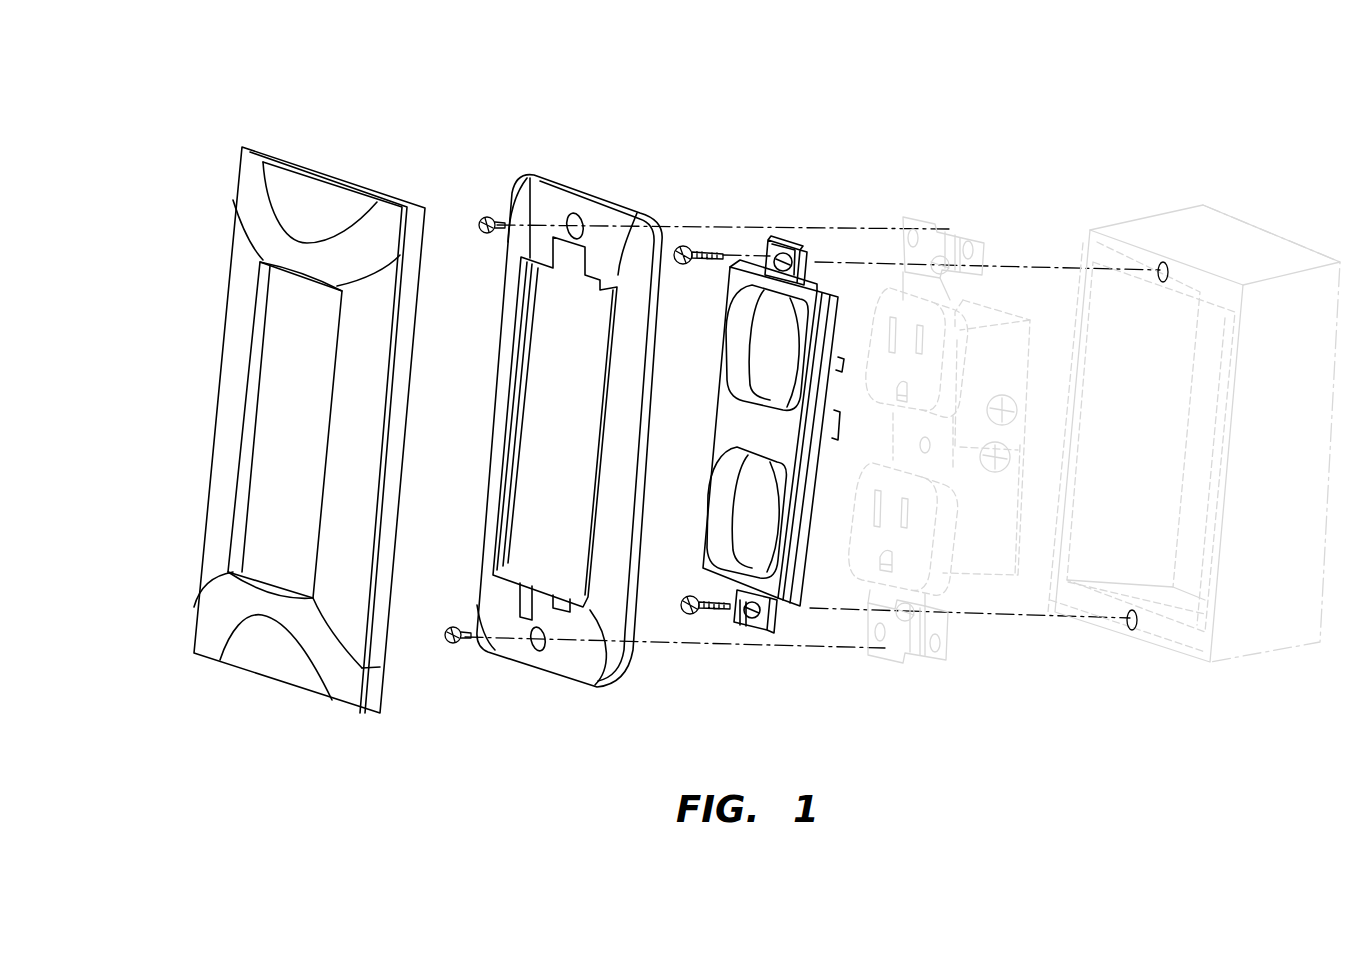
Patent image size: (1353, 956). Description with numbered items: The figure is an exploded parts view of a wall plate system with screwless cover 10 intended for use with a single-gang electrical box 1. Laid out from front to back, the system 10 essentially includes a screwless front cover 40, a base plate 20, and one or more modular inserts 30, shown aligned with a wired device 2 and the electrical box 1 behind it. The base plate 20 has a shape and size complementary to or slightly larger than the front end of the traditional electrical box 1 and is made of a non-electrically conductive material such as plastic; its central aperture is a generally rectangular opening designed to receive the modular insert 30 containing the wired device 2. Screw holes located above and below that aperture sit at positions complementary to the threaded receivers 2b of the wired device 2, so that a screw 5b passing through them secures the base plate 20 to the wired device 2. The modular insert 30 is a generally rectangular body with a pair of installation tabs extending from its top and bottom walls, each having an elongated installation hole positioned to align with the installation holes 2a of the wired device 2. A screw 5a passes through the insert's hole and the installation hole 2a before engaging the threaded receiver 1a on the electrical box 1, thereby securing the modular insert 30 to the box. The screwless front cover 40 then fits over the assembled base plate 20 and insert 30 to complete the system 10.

The wall plate system with screwless cover 10 is at (212, 112).
The screwless front cover 40 is at (270, 700).
The base plate 20 is at (537, 688).
The modular insert 30 is at (744, 638).
The screw 5a is at (705, 266).
The screw 5b is at (490, 215).
The wired device 2 is at (947, 203).
The installation holes 2a is at (968, 250).
The threaded receivers 2b is at (945, 228).
The single-gang electrical box 1 is at (1287, 472).
The threaded receiver 1a is at (1163, 262).